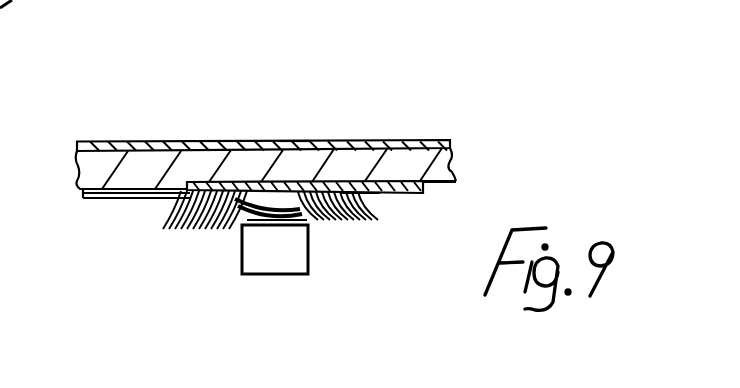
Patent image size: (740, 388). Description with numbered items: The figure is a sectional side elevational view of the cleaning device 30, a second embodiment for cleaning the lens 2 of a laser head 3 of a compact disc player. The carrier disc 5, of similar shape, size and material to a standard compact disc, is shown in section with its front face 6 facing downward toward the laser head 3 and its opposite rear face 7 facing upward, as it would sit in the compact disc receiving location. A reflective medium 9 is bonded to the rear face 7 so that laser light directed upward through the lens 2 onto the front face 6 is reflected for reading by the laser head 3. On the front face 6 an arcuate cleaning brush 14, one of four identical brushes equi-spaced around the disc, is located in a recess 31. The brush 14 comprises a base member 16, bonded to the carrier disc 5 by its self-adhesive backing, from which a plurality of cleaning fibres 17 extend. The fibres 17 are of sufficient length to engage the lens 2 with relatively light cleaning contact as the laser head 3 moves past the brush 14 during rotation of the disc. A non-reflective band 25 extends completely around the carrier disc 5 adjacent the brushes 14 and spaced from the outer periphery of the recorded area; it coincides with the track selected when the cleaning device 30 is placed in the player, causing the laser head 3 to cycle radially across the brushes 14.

The lens 2 is at (275, 223).
The laser head 3 is at (280, 253).
The carrier disc 5 is at (460, 165).
The front face 6 is at (442, 183).
The rear face 7 is at (173, 141).
The reflective medium 9 is at (293, 142).
The cleaning brush 14 is at (360, 210).
The base member 16 is at (245, 182).
The cleaning fibres 17 is at (177, 208).
The non-reflective band 25 is at (98, 200).
The cleaning device 30 is at (480, 118).
The recess 31 is at (357, 185).